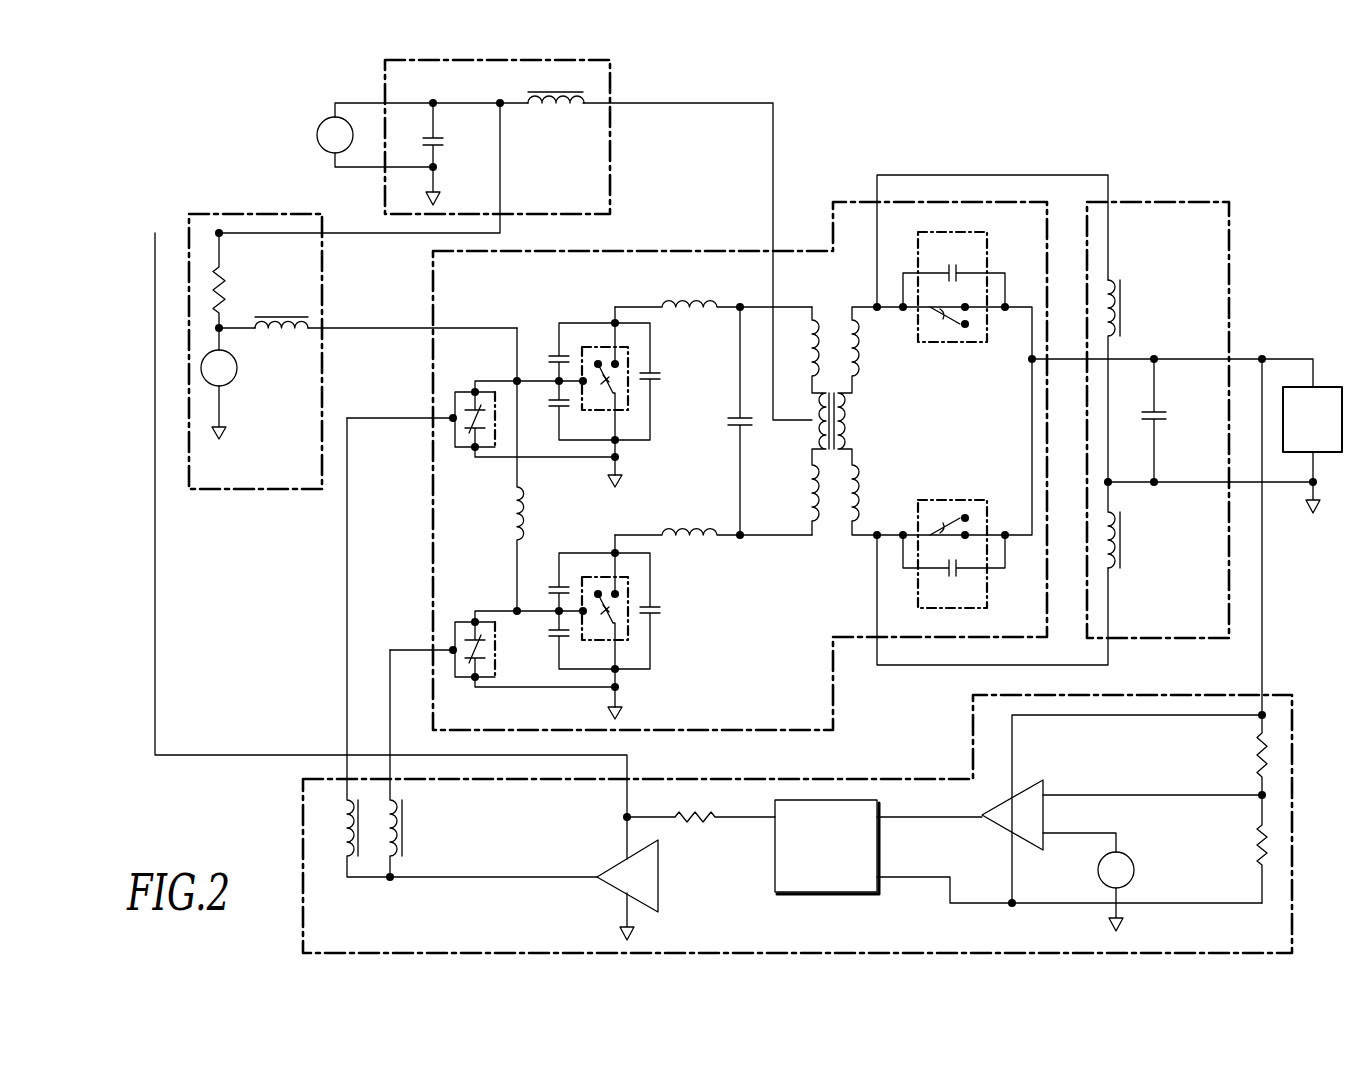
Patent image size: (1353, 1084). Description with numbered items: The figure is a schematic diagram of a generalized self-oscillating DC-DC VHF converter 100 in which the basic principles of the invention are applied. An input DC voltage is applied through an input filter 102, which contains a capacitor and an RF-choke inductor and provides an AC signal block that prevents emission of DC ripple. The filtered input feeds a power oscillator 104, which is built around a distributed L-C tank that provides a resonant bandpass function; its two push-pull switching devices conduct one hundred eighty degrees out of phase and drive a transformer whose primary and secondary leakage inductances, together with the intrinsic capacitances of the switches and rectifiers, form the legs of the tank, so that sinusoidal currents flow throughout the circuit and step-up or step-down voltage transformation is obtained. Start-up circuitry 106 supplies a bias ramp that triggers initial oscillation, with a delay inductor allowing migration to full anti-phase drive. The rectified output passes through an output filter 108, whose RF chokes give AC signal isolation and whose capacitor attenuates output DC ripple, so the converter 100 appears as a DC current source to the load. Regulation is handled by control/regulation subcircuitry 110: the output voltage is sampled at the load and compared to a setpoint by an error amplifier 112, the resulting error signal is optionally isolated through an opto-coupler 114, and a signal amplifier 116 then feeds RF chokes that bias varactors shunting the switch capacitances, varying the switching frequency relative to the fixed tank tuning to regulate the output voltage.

The self-oscillating DC-DC VHF converter 100 is at (1121, 131).
The input filter 102 is at (610, 150).
The power oscillator 104 is at (678, 250).
The start-up circuitry 106 is at (232, 490).
The output filter 108 is at (1229, 268).
The control/regulation subcircuitry 110 is at (827, 685).
The error amplifier 112 is at (1001, 828).
The opto-coupler 114 is at (812, 892).
The signal amplifier 116 is at (658, 892).